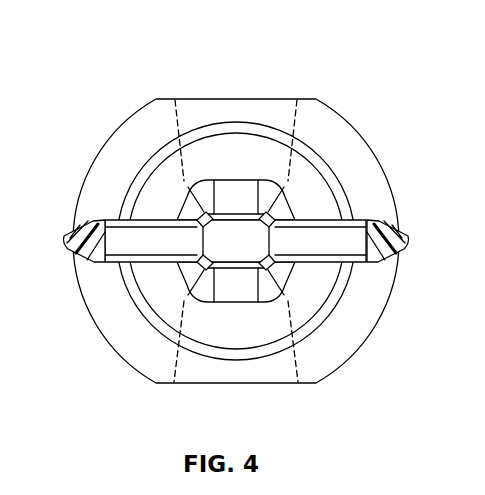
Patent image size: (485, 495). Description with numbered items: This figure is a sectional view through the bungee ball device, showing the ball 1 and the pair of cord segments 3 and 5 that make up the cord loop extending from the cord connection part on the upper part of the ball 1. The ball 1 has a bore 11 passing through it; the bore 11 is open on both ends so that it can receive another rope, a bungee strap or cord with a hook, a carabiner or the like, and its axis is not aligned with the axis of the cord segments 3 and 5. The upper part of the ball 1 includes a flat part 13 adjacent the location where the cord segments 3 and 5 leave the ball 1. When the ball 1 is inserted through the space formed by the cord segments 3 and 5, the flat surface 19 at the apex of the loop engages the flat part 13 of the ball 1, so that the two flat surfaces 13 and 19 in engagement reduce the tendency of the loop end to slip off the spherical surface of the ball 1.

The ball 1 is at (372, 147).
The cord segment 3 is at (408, 233).
The cord segment 5 is at (80, 219).
The bore 11 is at (268, 66).
The flat part 13 is at (183, 165).
The flat surface 19 is at (345, 248).